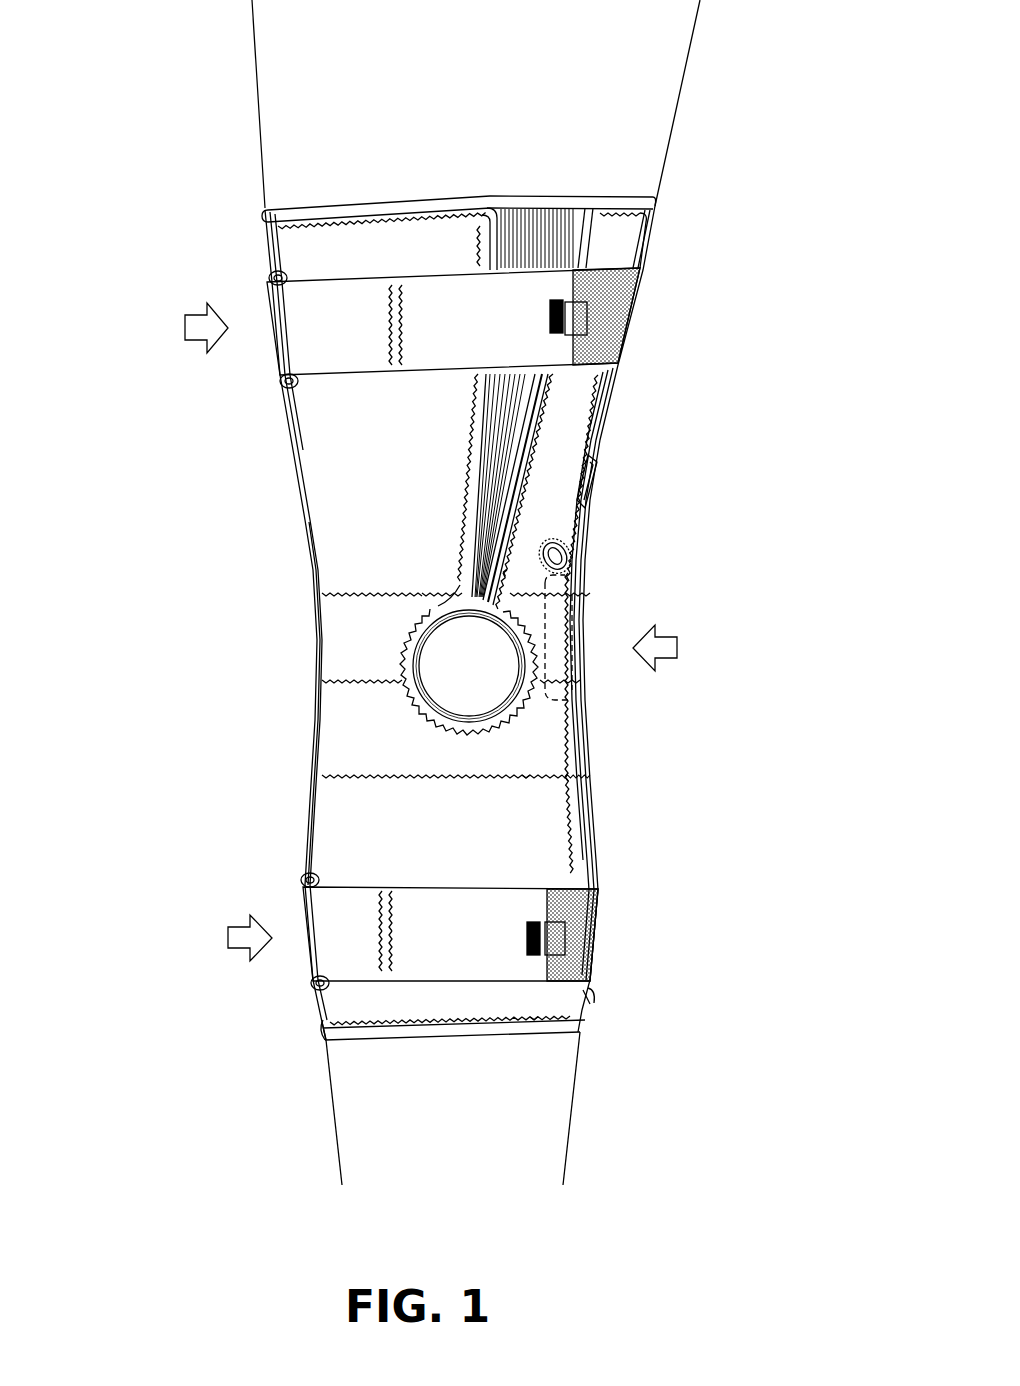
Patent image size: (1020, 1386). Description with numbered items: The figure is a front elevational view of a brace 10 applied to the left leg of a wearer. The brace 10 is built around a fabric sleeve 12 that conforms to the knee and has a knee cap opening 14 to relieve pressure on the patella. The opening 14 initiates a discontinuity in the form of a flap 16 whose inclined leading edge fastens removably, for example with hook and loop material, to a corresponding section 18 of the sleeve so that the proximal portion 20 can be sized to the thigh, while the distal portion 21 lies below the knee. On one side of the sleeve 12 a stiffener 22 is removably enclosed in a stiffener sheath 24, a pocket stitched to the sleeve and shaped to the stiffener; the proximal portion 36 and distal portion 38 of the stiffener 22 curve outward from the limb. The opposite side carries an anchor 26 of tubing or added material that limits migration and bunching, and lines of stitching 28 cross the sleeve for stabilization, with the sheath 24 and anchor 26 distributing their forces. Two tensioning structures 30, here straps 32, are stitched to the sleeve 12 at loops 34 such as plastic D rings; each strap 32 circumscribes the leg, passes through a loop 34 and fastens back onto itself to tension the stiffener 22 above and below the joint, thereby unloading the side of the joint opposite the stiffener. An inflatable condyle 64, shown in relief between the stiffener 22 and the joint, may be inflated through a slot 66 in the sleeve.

The brace 10 is at (240, 183).
The sleeve 12 is at (332, 519).
The knee cap opening 14 is at (445, 690).
The flap 16 is at (422, 243).
The section 18 is at (518, 232).
The proximal portion 20 is at (326, 243).
The distal portion 21 is at (440, 1002).
The stiffener 22 is at (600, 473).
The stiffener sheath 24 is at (590, 543).
The anchor 26 is at (318, 603).
The lines of stitching 28 is at (530, 778).
The tensioning structures 30 is at (337, 362).
The straps 32 is at (625, 342).
The loops 34 is at (270, 278).
The proximal portion of the stiffener 36 is at (647, 253).
The distal portion of the stiffener 38 is at (583, 1000).
The inflatable cushion or condyle 64 is at (597, 665).
The slot 66 is at (563, 562).